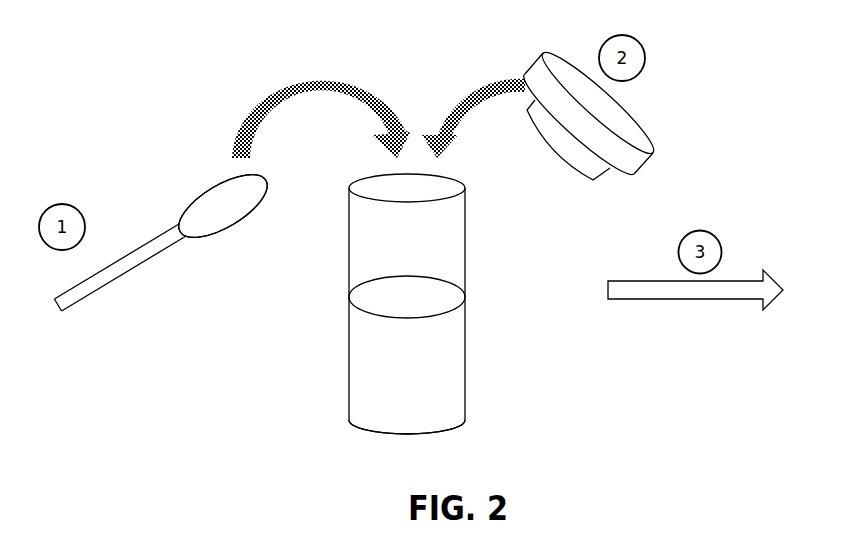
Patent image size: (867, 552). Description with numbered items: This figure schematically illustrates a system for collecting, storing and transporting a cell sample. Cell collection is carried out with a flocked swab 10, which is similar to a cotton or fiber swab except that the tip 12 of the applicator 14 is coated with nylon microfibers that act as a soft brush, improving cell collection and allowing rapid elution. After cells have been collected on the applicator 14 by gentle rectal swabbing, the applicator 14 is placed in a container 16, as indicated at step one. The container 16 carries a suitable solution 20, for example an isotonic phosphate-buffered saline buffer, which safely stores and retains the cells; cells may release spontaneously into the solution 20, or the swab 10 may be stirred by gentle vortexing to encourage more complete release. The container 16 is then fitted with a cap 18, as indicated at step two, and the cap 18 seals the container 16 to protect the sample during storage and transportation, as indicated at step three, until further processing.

The flocked swab 10 is at (152, 258).
The tip 12 is at (267, 183).
The applicator 14 is at (207, 199).
The container 16 is at (467, 222).
The cap 18 is at (640, 140).
The solution 20 is at (358, 363).